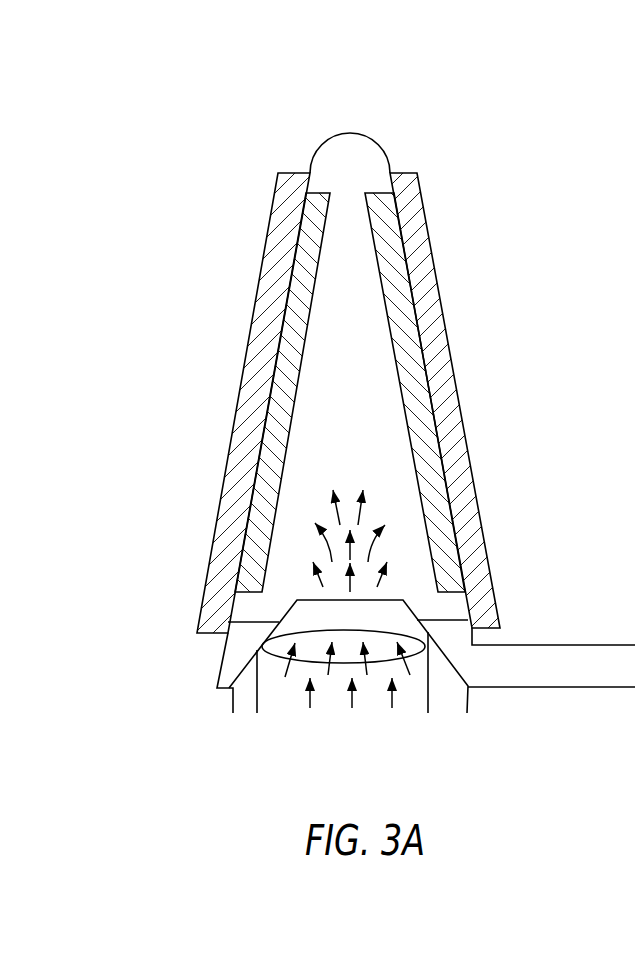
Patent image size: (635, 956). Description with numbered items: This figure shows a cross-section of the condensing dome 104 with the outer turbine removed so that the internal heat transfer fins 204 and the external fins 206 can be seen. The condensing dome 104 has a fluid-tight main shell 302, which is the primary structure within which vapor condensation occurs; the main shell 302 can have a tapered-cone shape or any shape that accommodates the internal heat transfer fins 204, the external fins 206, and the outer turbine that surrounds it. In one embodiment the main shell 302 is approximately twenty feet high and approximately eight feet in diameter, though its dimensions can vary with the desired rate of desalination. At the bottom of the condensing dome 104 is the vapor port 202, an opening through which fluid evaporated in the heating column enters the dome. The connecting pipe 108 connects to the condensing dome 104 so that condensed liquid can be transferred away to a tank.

The condensing dome 104 is at (523, 213).
The connecting pipe 108 is at (568, 645).
The vapor port 202 is at (240, 647).
The internal heat transfer fins 204 is at (290, 390).
The external fins 206 is at (413, 203).
The main shell 302 is at (360, 137).